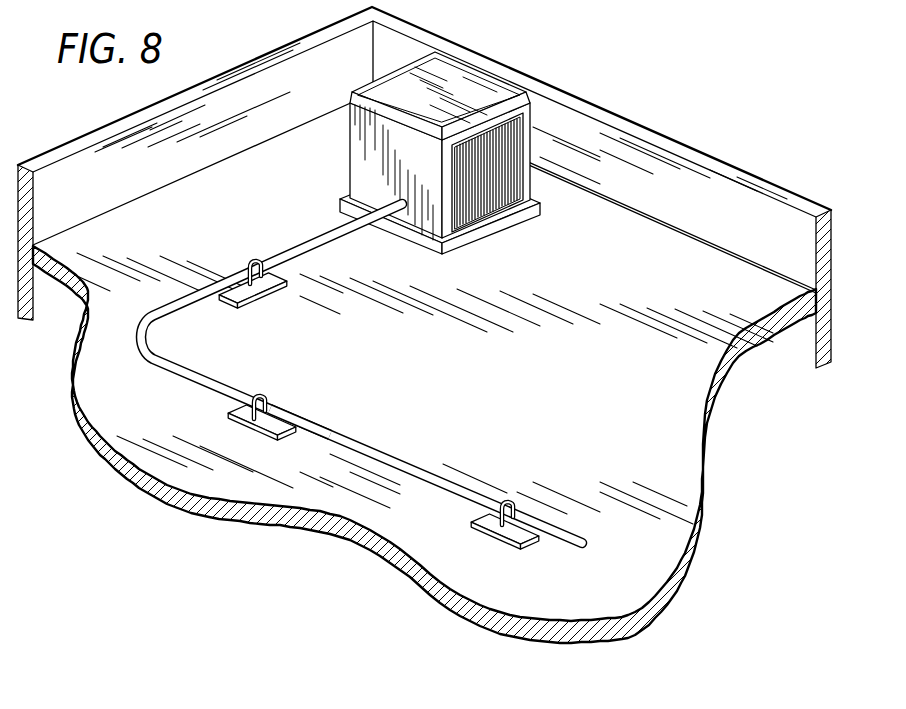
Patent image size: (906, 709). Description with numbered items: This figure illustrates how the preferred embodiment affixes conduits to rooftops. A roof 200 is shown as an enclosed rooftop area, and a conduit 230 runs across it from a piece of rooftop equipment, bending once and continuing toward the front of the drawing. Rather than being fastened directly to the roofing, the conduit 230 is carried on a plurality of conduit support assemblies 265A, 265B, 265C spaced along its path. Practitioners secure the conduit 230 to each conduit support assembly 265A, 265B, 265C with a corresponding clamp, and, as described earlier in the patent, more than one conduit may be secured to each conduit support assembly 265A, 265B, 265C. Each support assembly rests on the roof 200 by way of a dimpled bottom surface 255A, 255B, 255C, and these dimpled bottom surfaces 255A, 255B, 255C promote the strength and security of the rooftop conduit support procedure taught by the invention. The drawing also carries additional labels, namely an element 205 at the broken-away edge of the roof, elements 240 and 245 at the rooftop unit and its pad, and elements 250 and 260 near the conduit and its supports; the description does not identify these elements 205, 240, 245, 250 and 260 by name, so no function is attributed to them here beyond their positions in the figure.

The roof 200 is at (702, 148).
The floor slab 205 is at (683, 463).
The conduit 230 is at (340, 237).
The condensing unit 240 is at (348, 193).
The unit base pad 245 is at (548, 226).
The pipe support assembly 250 is at (285, 301).
The dimpled bottom surface 255A is at (240, 305).
The dimpled bottom surface 255B is at (228, 419).
The dimpled bottom surface 255C is at (538, 551).
The pipe run 260 is at (293, 403).
The conduit support assembly 265A is at (252, 262).
The conduit support assembly 265B is at (262, 395).
The conduit support assembly 265C is at (512, 504).